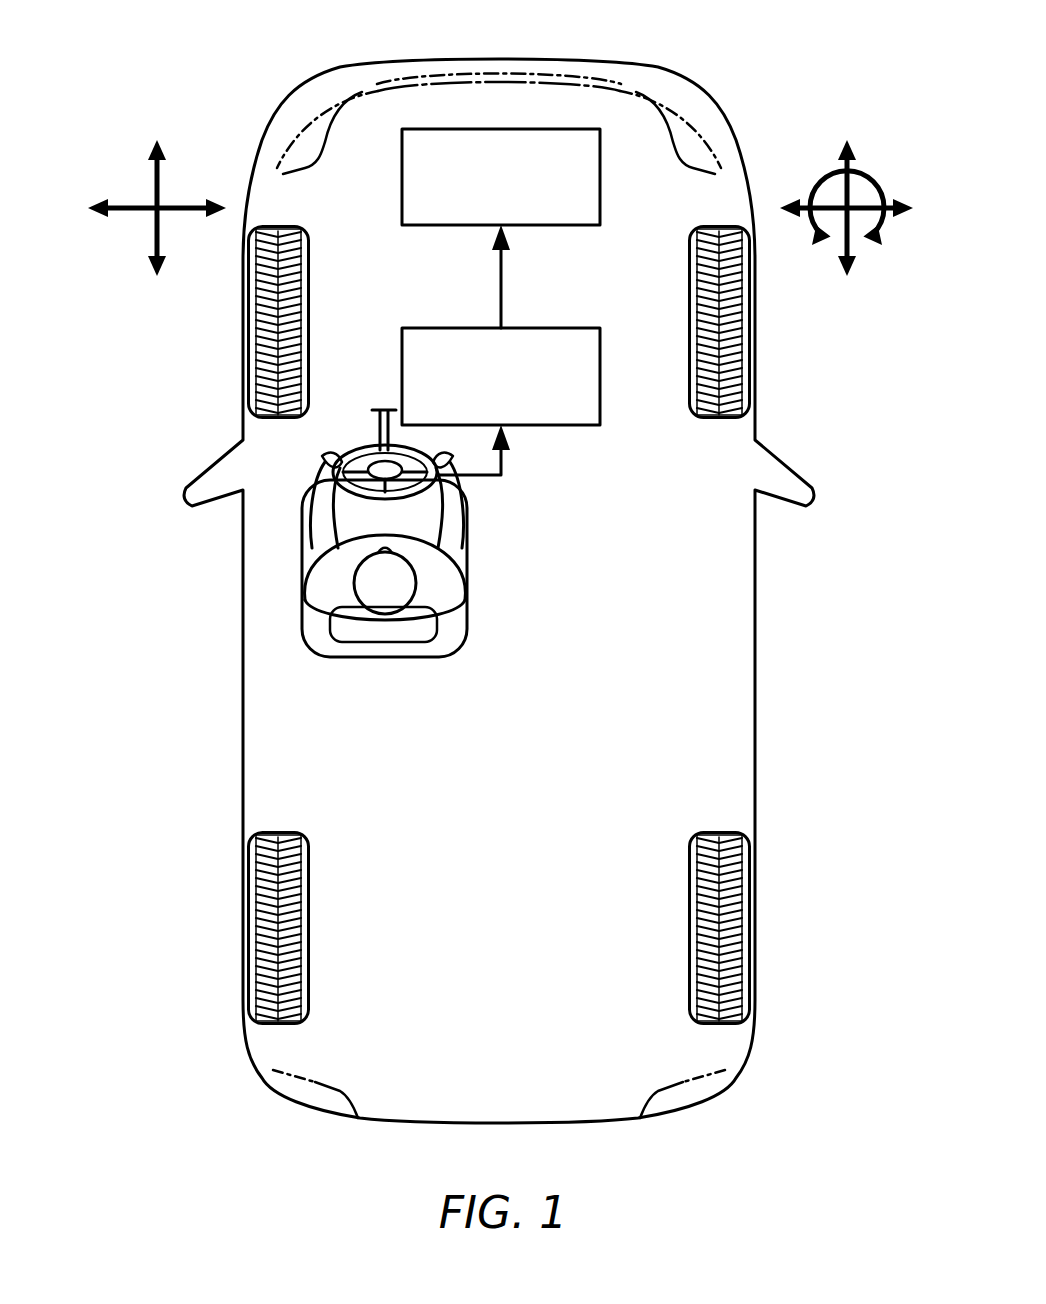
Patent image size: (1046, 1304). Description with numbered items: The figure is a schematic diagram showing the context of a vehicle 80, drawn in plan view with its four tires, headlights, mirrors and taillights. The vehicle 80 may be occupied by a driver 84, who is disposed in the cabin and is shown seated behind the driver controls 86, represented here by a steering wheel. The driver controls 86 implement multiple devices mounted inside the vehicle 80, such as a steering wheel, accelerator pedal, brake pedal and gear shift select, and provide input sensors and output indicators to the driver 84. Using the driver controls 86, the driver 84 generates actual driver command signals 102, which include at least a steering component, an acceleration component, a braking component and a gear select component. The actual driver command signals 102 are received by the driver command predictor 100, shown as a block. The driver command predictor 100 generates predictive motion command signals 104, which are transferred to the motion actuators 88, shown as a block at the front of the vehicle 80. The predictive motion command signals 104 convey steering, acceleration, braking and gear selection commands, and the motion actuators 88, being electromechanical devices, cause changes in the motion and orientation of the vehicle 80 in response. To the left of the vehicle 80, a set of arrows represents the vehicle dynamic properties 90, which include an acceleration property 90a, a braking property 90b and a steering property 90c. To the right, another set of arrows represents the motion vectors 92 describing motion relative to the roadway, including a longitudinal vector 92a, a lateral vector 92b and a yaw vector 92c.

The vehicle 80 is at (333, 89).
The driver 84 is at (335, 585).
The driver controls 86 is at (332, 462).
The motion actuators 88 is at (501, 177).
The vehicle dynamic properties 90 is at (133, 204).
The acceleration property 90a is at (156, 160).
The braking property 90b is at (157, 257).
The steering property 90c is at (99, 208).
The motion vectors 92 is at (871, 202).
The longitudinal vector 92a is at (846, 160).
The lateral vector 92b is at (905, 208).
The yaw vector 92c is at (847, 257).
The driver command predictor 100 is at (501, 376).
The actual driver command signals 102 is at (478, 478).
The predictive motion command signals 104 is at (503, 296).